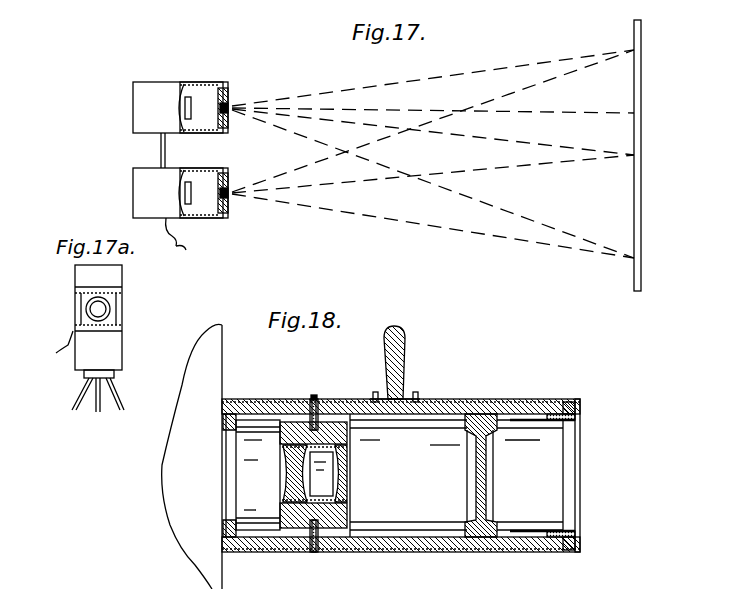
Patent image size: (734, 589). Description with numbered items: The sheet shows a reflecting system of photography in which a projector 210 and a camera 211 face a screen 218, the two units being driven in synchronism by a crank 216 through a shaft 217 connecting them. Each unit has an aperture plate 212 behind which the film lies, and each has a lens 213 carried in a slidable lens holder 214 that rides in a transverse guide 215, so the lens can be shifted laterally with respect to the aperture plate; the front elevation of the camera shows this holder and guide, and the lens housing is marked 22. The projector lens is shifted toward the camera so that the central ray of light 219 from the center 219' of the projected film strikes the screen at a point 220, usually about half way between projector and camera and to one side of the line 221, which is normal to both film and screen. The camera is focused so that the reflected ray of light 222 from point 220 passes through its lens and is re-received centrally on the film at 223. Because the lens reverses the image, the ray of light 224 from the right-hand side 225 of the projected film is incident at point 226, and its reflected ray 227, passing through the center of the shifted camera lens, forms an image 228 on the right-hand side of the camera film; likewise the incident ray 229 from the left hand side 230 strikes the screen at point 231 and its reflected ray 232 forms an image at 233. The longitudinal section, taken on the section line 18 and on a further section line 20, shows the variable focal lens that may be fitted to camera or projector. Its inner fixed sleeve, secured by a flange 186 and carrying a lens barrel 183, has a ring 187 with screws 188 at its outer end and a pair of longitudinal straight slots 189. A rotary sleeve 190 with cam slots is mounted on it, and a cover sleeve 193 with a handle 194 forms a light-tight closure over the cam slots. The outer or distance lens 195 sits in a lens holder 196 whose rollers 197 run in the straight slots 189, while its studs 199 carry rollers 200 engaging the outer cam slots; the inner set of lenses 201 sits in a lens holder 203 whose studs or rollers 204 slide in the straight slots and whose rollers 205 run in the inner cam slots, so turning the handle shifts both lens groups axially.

In FIG. 17, the projector 210 is at (152, 82).
In FIG. 17, the camera 211 is at (133, 206).
In FIG. 17, the lens housing / section line 22 is at (204, 118).
In FIG. 18, the lens housing / section line 22 is at (478, 399).
In FIG. 17, the center of the film 219' is at (198, 94).
In FIG. 17, the right-hand side of the film 225 is at (185, 115).
In FIG. 17, the left hand side of the projected film 230 is at (216, 96).
In FIG. 17, the lens 213 is at (233, 108).
In FIG. 17, the shaft 217 is at (147, 150).
In FIG. 17, the image on the film in the camera 233 is at (188, 182).
In FIG. 17, the central point on the film 223 is at (185, 195).
In FIG. 17, the aperture plate 212 is at (229, 195).
In FIG. 17, the image on the right hand side of the film 228 is at (196, 218).
In FIG. 17, the crank 216 is at (186, 250).
In FIG. 17A, the crank 216 is at (56, 353).
In FIG. 17, the ray of light 224 is at (446, 77).
In FIG. 17, the line 221 is at (560, 112).
In FIG. 17, the central ray of light 219 is at (433, 124).
In FIG. 17, the incident ray 229 is at (434, 185).
In FIG. 17, the reflected ray 227 is at (486, 100).
In FIG. 17, the reflected ray of light 222 is at (504, 167).
In FIG. 17, the reflected ray 232 is at (473, 233).
In FIG. 17, the screen 218 is at (639, 118).
In FIG. 17, the point on the screen 226 is at (641, 48).
In FIG. 17, the point on the screen 220 is at (641, 158).
In FIG. 17, the point on the screen 231 is at (641, 262).
In FIG. 17A, the transverse guide 215 is at (80, 291).
In FIG. 17A, the slidable lens holder 214 is at (116, 303).
In FIG. 18, the rollers 200 is at (522, 388).
In FIG. 18, the section line 18 is at (178, 583).
In FIG. 18, the section line 20 is at (478, 578).
In FIG. 18, the rotary sleeve 190 is at (430, 408).
In FIG. 18, the cover sleeve 193 is at (358, 545).
In FIG. 18, the ring 187 is at (582, 405).
In FIG. 18, the screws 188 is at (582, 422).
In FIG. 18, the flange 186 is at (222, 428).
In FIG. 18, the lens barrel 183 is at (258, 537).
In FIG. 18, the studs or rollers 204 is at (292, 540).
In FIG. 18, the lens holder 203 is at (347, 515).
In FIG. 18, the inner set of lenses 201 is at (337, 474).
In FIG. 18, the rollers 205 is at (313, 399).
In FIG. 18, the longitudinal straight slots 189 is at (420, 540).
In FIG. 18, the studs 199 is at (482, 406).
In FIG. 18, the outer or distance lens 195 is at (505, 479).
In FIG. 18, the lens holder 196 is at (498, 527).
In FIG. 18, the rollers 197 is at (500, 552).
In FIG. 18, the handle 194 is at (386, 340).